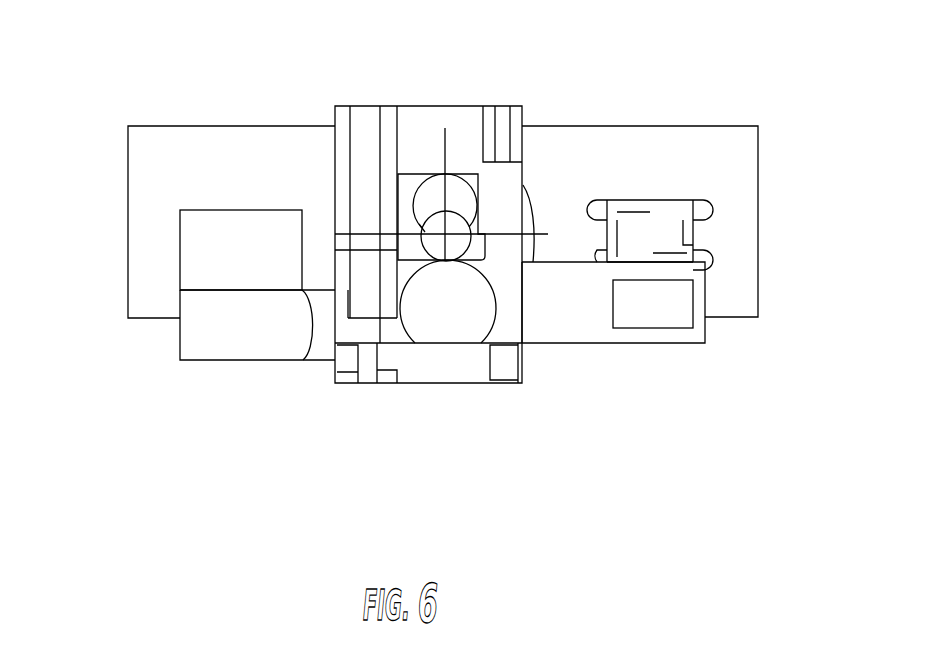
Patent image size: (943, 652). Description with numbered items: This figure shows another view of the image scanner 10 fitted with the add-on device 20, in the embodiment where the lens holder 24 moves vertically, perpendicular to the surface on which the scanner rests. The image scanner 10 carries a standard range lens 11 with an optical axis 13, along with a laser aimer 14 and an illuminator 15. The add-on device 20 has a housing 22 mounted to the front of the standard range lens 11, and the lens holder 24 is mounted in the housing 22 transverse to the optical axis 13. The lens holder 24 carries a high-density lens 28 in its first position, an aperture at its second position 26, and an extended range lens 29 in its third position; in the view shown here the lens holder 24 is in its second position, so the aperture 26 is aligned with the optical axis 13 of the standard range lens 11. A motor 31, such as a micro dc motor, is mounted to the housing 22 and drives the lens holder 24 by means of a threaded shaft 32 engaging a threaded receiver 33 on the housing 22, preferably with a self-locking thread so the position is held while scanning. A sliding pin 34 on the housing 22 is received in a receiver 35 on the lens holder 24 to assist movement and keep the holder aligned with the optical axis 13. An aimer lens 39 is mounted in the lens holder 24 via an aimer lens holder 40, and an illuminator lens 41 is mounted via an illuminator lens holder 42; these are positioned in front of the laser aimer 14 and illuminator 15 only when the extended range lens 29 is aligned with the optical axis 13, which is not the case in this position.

The image scanner 10 is at (708, 123).
The standard range lens 11 is at (435, 222).
The optical axis 13 is at (448, 230).
The laser aimer 14 is at (675, 219).
The illuminator 15 is at (214, 238).
The add-on device 20 is at (534, 448).
The housing 22 is at (328, 164).
The lens holder 24 is at (500, 321).
The second position 26 is at (420, 228).
The high-density lens 28 is at (426, 181).
The extended range lens 29 is at (429, 306).
The motor 31 is at (355, 104).
The threaded shaft 32 is at (352, 292).
The threaded receiver 33 is at (369, 339).
The sliding pin 34 is at (527, 184).
The receiver 35 is at (515, 302).
The aimer lens 39 is at (674, 312).
The aimer lens holder 40 is at (589, 321).
The illuminator lens 41 is at (214, 320).
The illuminator lens holder 42 is at (322, 309).